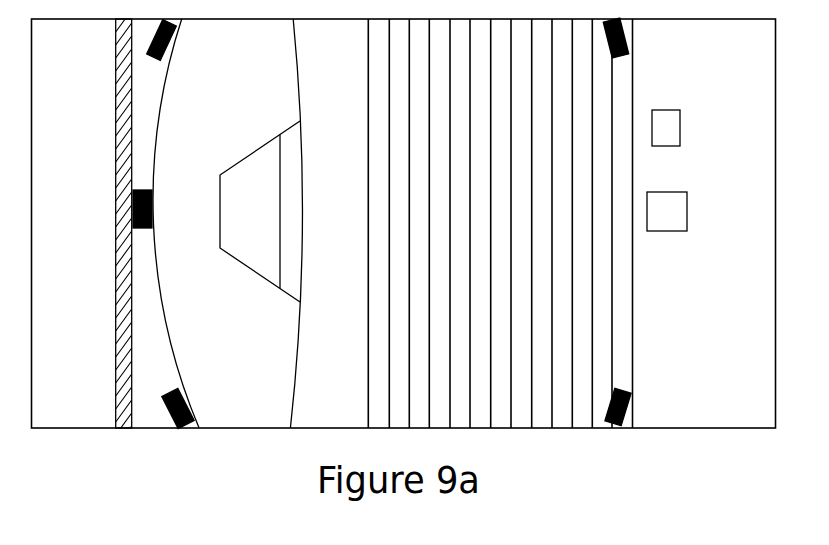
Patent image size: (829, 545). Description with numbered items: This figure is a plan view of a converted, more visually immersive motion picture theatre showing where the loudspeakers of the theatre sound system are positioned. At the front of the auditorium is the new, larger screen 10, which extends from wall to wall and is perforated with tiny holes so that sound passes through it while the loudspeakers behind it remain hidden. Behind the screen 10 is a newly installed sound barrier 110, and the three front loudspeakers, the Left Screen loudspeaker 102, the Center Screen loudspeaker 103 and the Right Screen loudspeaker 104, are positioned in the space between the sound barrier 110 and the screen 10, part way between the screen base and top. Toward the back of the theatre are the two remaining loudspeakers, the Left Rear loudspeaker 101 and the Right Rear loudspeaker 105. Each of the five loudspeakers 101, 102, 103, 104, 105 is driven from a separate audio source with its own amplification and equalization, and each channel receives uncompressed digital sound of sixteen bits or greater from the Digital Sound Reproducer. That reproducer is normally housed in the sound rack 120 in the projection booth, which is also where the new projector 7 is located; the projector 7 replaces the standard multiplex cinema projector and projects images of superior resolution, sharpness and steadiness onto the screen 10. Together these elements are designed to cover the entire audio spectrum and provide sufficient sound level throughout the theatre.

The projector 7 is at (672, 229).
The screen 10 is at (157, 133).
The Left Rear loudspeaker 101 is at (632, 397).
The Left Screen loudspeaker 102 is at (183, 393).
The Center Screen loudspeaker 103 is at (136, 228).
The Right Screen loudspeaker 104 is at (173, 43).
The Right Rear loudspeaker 105 is at (630, 55).
The sound barrier 110 is at (116, 190).
The sound rack 120 is at (676, 128).